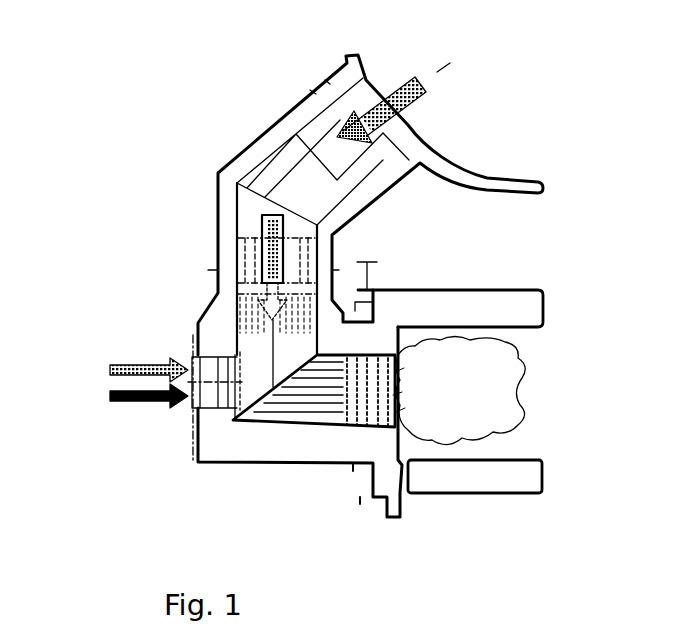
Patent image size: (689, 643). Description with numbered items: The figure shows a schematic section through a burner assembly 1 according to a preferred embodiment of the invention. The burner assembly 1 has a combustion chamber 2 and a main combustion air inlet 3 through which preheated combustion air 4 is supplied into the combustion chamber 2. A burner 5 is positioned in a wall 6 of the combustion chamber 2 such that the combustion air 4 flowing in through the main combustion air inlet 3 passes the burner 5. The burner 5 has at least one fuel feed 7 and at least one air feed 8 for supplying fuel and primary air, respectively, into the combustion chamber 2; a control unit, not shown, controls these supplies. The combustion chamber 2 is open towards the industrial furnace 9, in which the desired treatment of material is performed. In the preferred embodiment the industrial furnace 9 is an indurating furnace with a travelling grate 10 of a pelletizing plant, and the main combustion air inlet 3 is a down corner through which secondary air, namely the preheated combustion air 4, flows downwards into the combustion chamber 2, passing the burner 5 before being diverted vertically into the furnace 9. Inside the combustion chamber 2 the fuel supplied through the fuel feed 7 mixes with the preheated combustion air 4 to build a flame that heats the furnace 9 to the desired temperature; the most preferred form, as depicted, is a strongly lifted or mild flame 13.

The burner assembly 1 is at (182, 327).
The combustion chamber 2 is at (313, 392).
The main combustion air inlet 3 is at (285, 160).
The preheated combustion air 4 is at (272, 250).
The burner 5 is at (210, 387).
The wall 6 is at (227, 443).
The fuel feed 7 is at (120, 400).
The air feed 8 is at (125, 362).
The industrial furnace 9 is at (528, 347).
The travelling grate 10 is at (473, 475).
The lifted flame 13 is at (465, 395).